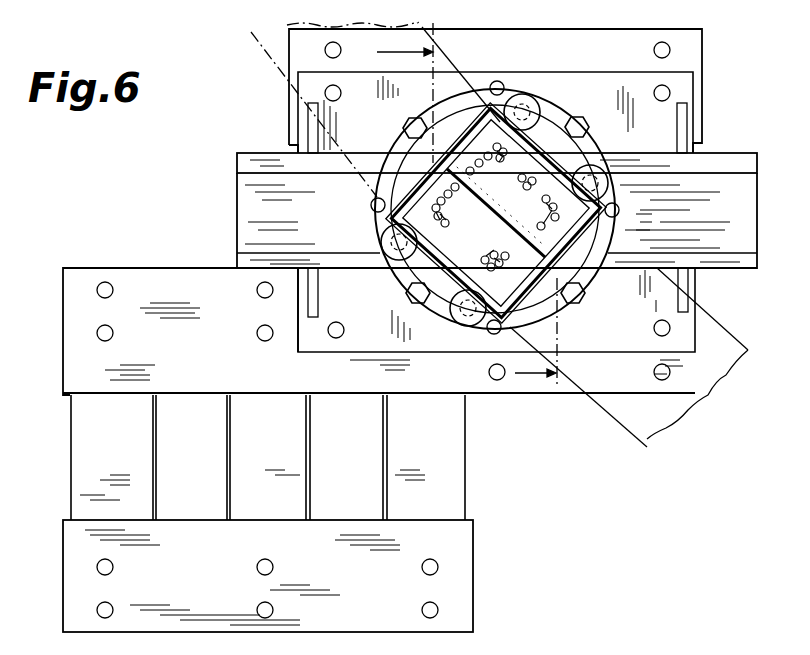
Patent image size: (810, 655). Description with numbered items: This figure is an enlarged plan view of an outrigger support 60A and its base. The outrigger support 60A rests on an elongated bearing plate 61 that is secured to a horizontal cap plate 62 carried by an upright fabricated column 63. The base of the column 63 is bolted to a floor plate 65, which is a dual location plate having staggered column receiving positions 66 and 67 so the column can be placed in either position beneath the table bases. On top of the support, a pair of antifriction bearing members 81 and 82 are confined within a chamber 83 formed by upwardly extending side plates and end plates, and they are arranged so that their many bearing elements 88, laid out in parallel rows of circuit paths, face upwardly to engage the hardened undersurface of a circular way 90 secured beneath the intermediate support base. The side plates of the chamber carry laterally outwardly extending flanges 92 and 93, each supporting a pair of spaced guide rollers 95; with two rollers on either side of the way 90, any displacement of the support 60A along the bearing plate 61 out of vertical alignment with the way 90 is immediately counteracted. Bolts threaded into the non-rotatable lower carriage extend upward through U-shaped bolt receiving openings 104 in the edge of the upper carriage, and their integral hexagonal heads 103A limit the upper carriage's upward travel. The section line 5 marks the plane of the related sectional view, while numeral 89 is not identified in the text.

The section line 5- 5 is at (478, 205).
The outrigger support 60A is at (643, 220).
The elongated bearing plate 61 is at (740, 203).
The horizontal cap plate 62 is at (742, 161).
The upright fabricated column 63 is at (685, 115).
The floor plate 65 is at (180, 268).
The column receiving position 66 is at (64, 310).
The column receiving position 67 is at (696, 50).
The antifriction bearing member 81 is at (482, 229).
The antifriction bearing member 82 is at (514, 191).
The chamber 83 is at (268, 587).
The bearing elements 88 is at (495, 207).
The column members 89 is at (268, 525).
The circular way 90 is at (618, 425).
The flange 92 is at (443, 272).
The flange 93 is at (553, 157).
The guide rollers 95 is at (533, 110).
The hexagonal heads 103A is at (412, 132).
The U-shaped bolt receiving openings 104 is at (503, 84).